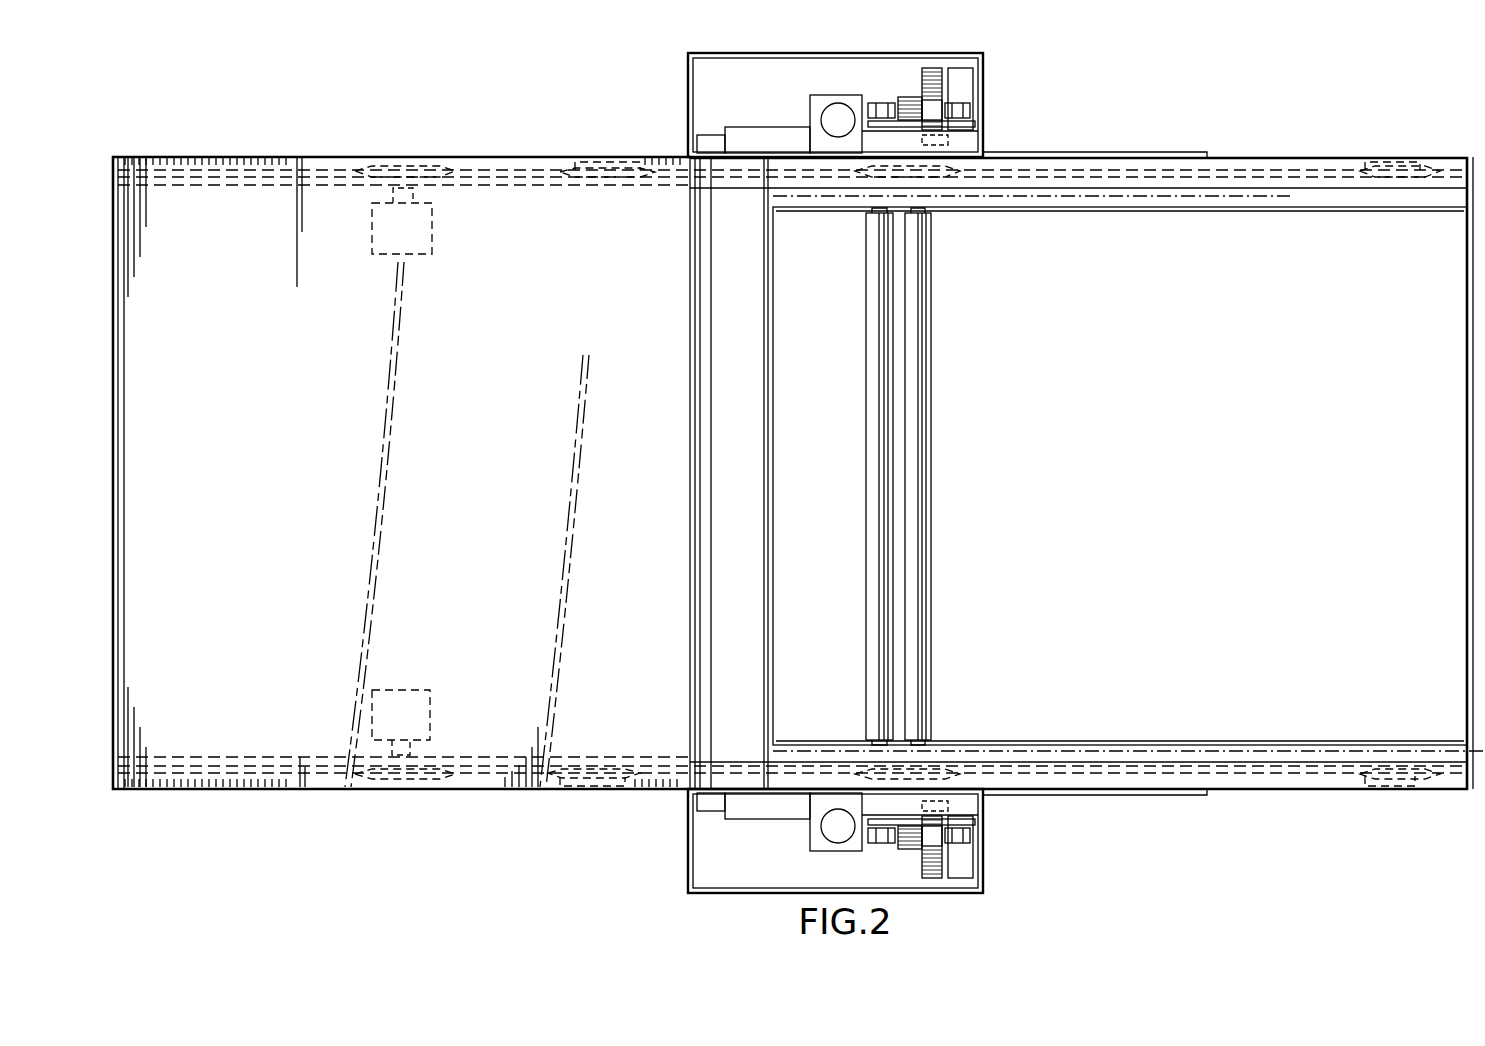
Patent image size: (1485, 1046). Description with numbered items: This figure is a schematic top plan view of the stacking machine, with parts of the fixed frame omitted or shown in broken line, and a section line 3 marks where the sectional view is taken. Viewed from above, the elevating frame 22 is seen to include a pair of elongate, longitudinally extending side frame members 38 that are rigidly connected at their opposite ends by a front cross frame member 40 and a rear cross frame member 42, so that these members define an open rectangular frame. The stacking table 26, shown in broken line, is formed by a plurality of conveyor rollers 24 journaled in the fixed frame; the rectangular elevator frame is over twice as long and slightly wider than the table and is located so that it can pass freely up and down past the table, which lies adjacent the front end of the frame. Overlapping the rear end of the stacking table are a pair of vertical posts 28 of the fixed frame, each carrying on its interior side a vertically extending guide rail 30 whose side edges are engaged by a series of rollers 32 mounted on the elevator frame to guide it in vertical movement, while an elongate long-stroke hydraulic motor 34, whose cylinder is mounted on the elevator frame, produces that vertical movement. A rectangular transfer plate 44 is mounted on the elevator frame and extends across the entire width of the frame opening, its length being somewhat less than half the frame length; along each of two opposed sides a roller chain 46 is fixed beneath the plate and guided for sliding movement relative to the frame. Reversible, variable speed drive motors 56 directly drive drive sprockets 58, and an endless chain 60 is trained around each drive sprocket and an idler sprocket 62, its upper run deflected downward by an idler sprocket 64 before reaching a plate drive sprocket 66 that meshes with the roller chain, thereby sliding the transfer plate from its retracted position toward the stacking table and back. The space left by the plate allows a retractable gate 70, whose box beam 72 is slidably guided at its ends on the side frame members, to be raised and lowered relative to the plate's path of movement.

The section line 3- 3 is at (280, 191).
The elevating frame 22 is at (494, 800).
The conveyor rollers 24 is at (918, 602).
The stacking table 26 is at (1118, 752).
The vertical posts 28 is at (986, 106).
The guide rail 30 is at (915, 100).
The rollers 32 is at (880, 104).
The hydraulic motor 34 is at (832, 122).
The side frame members 38 is at (320, 157).
The front cross frame member 40 is at (1468, 564).
The rear cross frame member 42 is at (112, 552).
The transfer plate 44 is at (458, 506).
The roller chain 46 is at (228, 188).
The drive motors 56 is at (430, 231).
The drive sprockets 58 is at (420, 170).
The endless chain 60 is at (532, 180).
The idler sprocket 62 is at (1402, 168).
The idler sprocket 64 is at (918, 762).
The plate drive sprocket 66 is at (604, 180).
The retractable gate 70 is at (770, 630).
The box beam 72 is at (748, 568).